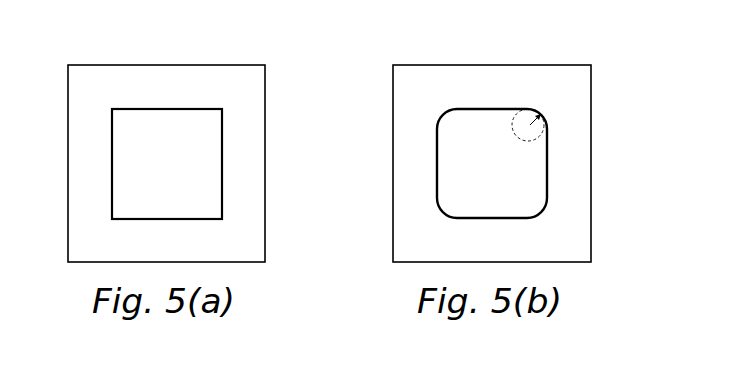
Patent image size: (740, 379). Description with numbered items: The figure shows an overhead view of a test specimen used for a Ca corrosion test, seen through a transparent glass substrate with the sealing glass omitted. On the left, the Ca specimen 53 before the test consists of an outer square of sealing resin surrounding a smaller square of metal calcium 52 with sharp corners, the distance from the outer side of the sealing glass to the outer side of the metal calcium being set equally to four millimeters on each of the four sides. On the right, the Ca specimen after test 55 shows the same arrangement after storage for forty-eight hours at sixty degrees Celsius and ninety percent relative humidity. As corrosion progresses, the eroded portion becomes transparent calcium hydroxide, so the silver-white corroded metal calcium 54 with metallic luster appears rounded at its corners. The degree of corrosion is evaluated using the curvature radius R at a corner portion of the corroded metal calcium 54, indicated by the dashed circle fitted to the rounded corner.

The metal calcium 52 is at (198, 179).
The Ca specimen 53 is at (250, 65).
The corroded metal calcium 54 is at (524, 178).
The Ca specimen after test 55 is at (575, 65).
The curvature radius R is at (547, 122).